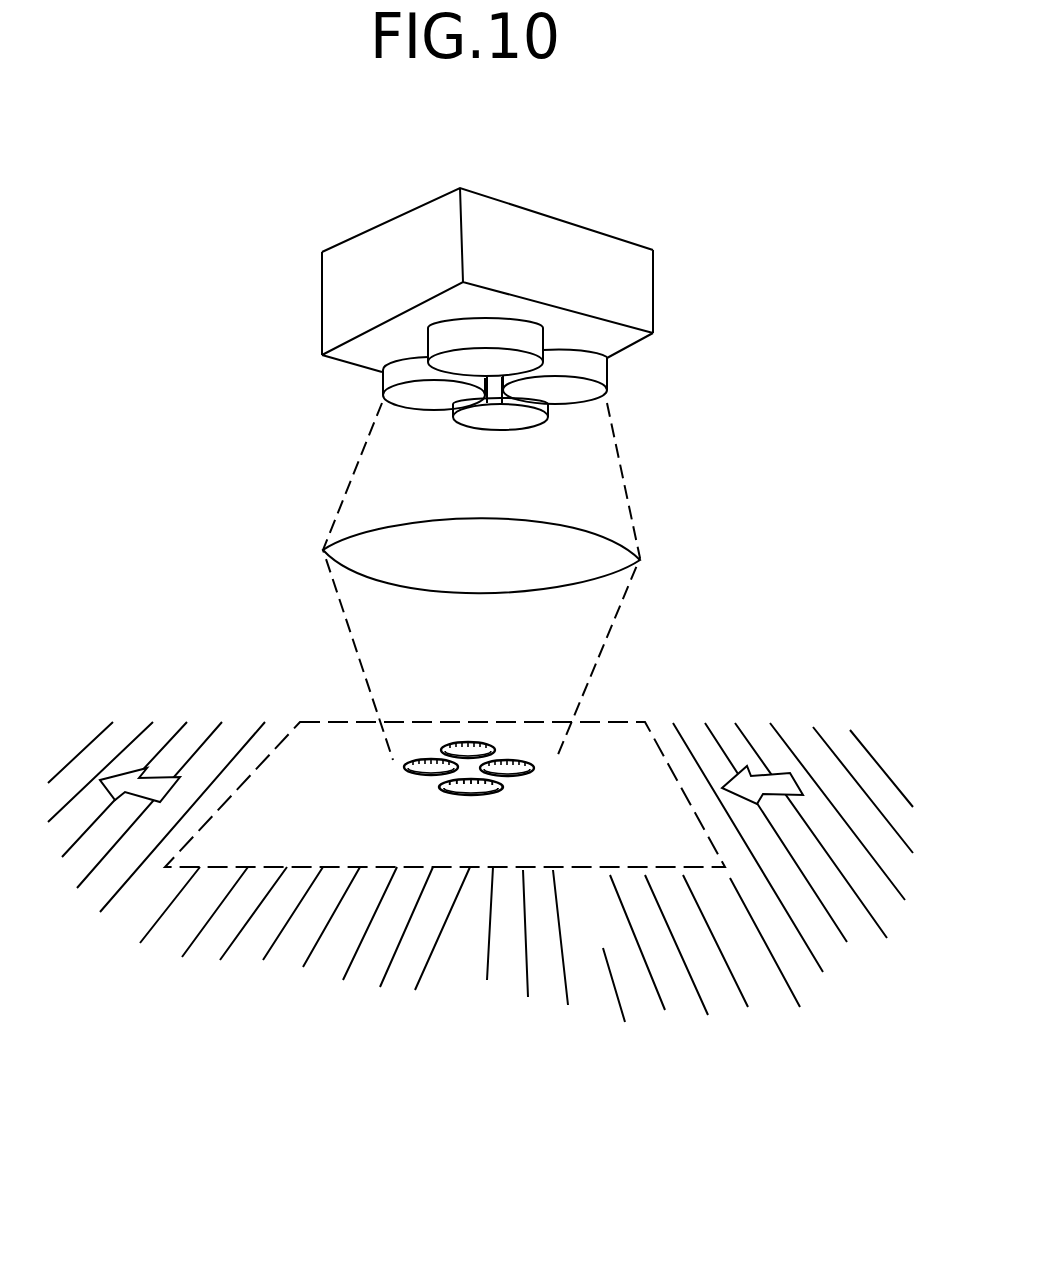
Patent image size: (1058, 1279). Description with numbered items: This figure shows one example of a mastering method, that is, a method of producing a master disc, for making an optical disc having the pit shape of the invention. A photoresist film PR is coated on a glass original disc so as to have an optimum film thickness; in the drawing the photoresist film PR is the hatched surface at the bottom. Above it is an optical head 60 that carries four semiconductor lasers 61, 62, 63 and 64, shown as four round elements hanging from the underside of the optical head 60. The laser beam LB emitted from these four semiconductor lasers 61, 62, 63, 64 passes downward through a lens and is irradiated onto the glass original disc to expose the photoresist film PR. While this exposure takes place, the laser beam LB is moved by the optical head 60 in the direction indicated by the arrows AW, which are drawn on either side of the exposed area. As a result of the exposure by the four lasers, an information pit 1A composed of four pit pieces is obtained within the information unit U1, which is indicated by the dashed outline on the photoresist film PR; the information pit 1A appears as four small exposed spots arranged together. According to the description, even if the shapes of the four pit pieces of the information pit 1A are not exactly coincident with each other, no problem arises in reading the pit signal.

The optical head 60 is at (630, 287).
The semiconductor laser 61 is at (522, 328).
The semiconductor laser 62 is at (392, 382).
The semiconductor laser 63 is at (481, 418).
The semiconductor laser 64 is at (597, 370).
The laser beam LB is at (593, 535).
The arrows AW is at (143, 768).
The information pit 1A is at (518, 822).
The information unit U1 is at (325, 867).
The photoresist film PR is at (548, 998).